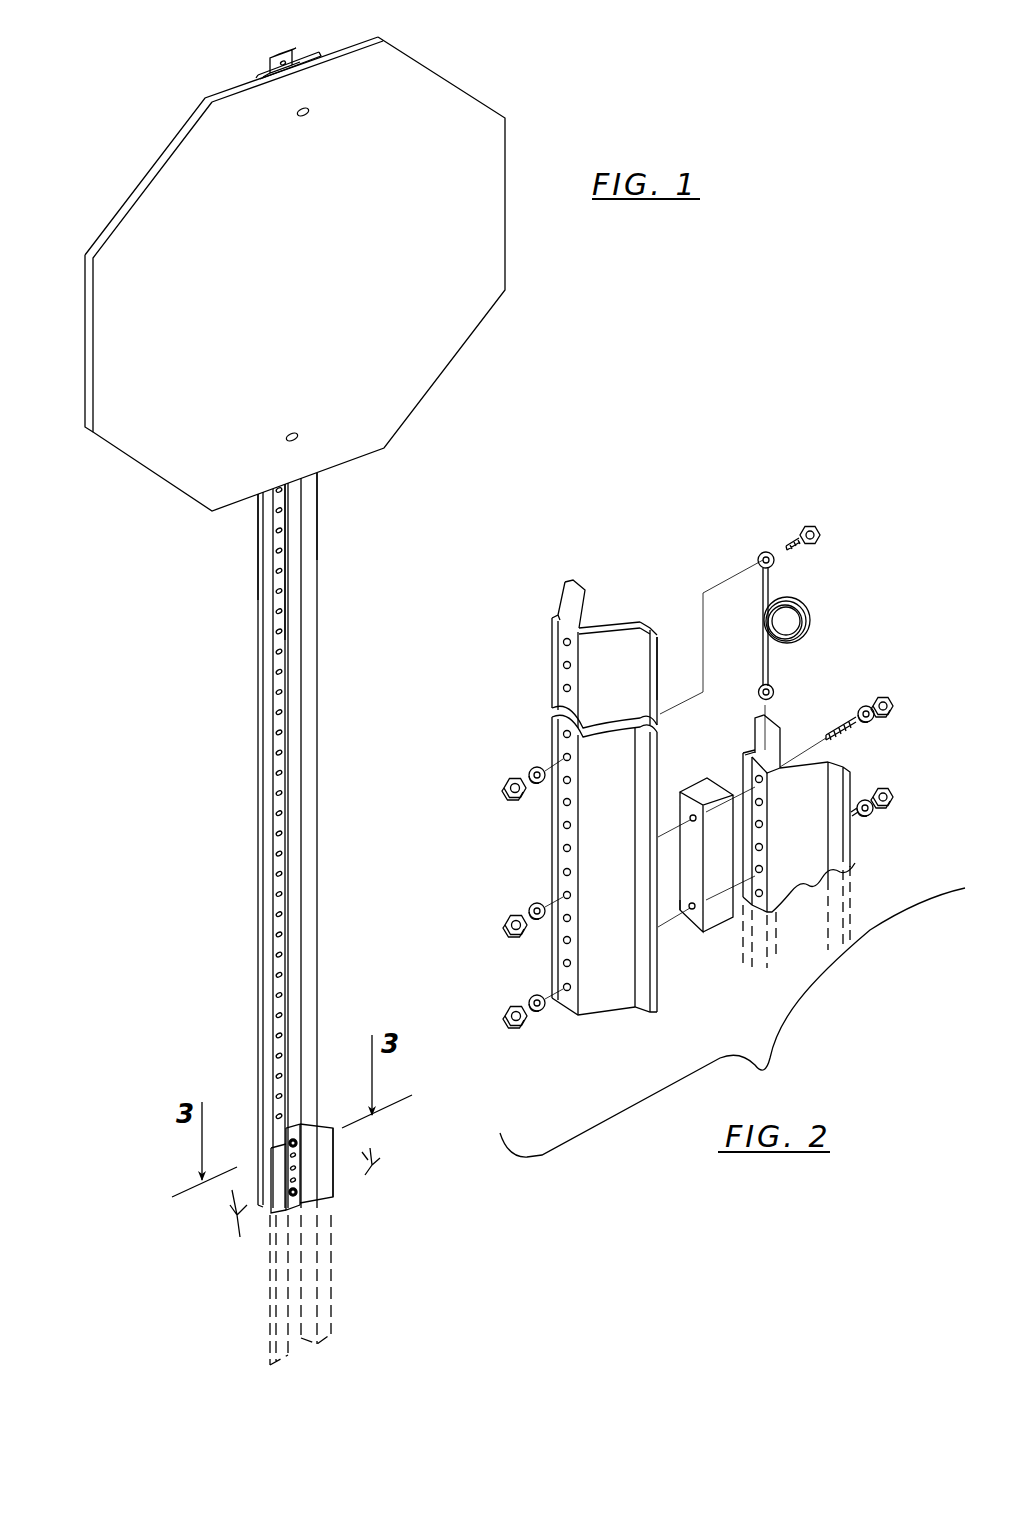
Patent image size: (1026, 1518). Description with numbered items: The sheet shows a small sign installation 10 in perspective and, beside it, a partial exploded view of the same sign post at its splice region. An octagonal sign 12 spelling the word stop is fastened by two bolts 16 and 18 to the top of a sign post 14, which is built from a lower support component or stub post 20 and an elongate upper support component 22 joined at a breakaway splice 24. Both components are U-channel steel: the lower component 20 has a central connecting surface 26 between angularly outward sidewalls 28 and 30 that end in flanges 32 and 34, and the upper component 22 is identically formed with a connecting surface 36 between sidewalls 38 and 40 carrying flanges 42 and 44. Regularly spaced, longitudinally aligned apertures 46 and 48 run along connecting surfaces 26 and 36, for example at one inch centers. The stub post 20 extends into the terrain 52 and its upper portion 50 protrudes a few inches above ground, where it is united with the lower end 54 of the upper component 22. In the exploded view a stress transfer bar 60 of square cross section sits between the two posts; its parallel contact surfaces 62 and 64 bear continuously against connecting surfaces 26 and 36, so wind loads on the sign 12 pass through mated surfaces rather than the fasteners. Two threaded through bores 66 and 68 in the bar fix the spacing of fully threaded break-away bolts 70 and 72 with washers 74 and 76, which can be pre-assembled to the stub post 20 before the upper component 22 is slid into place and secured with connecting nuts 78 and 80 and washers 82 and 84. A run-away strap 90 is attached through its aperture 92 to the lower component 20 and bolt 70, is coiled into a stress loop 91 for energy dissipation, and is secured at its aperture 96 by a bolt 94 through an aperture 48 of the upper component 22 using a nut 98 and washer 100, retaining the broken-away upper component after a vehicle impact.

In FIG. 1, the sign installation 10 is at (359, 261).
In FIG. 1, the sign 12 is at (395, 63).
In FIG. 1, the sign post 14 is at (353, 778).
In FIG. 2, the sign post 14 is at (613, 522).
In FIG. 1, the bolt 16 is at (308, 112).
In FIG. 1, the bolt 18 is at (297, 433).
In FIG. 1, the lower support component 20 is at (307, 1290).
In FIG. 2, the lower support component 20 is at (821, 834).
In FIG. 1, the upper support component 22 is at (272, 864).
In FIG. 2, the upper support component 22 is at (588, 638).
In FIG. 1, the breakaway splice 24 is at (271, 864).
In FIG. 2, the breakaway splice 24 is at (547, 843).
In FIG. 1, the connecting surface 26 is at (325, 1092).
In FIG. 2, the connecting surface 26 is at (804, 824).
In FIG. 2, the sidewall 28 is at (757, 733).
In FIG. 2, the sidewall 30 is at (827, 760).
In FIG. 1, the flange 32 is at (322, 1277).
In FIG. 2, the flange 32 is at (772, 720).
In FIG. 1, the flange 34 is at (277, 1313).
In FIG. 2, the flange 34 is at (837, 760).
In FIG. 1, the connecting surface 36 is at (281, 622).
In FIG. 2, the connecting surface 36 is at (587, 608).
In FIG. 2, the sidewall 38 is at (563, 593).
In FIG. 2, the sidewall 40 is at (617, 623).
In FIG. 1, the flange 42 is at (312, 528).
In FIG. 2, the flange 42 is at (575, 580).
In FIG. 1, the flange 44 is at (272, 578).
In FIG. 2, the flange 44 is at (655, 630).
In FIG. 1, the apertures 46 is at (297, 1177).
In FIG. 2, the apertures 46 is at (758, 897).
In FIG. 1, the apertures 48 is at (281, 692).
In FIG. 2, the apertures 48 is at (565, 687).
In FIG. 1, the upper portion 50 is at (268, 1140).
In FIG. 1, the terrain representation 52 is at (337, 1160).
In FIG. 2, the terrain representation 52 is at (790, 892).
In FIG. 1, the lower end 54 is at (340, 1140).
In FIG. 1, the stress transfer bar 60 is at (325, 1092).
In FIG. 2, the stress transfer bar 60 is at (706, 891).
In FIG. 2, the contact surface 62 is at (706, 868).
In FIG. 2, the contact surface 64 is at (693, 912).
In FIG. 2, the fastener receiving channel 66 is at (688, 815).
In FIG. 2, the fastener receiving channel 68 is at (686, 914).
In FIG. 2, the break-away bolt 70 is at (892, 700).
In FIG. 2, the break-away bolt 72 is at (892, 792).
In FIG. 2, the washer 74 is at (860, 708).
In FIG. 2, the washer 76 is at (870, 817).
In FIG. 2, the connecting nut 78 is at (508, 917).
In FIG. 2, the connecting nut 80 is at (510, 1007).
In FIG. 2, the washer 82 is at (539, 900).
In FIG. 2, the washer 84 is at (537, 993).
In FIG. 2, the run-away strap 90 is at (773, 619).
In FIG. 2, the loop 91 is at (810, 620).
In FIG. 2, the aperture 92 is at (770, 684).
In FIG. 2, the bolt 94 is at (818, 525).
In FIG. 2, the aperture 96 is at (762, 553).
In FIG. 2, the nut 98 is at (512, 778).
In FIG. 2, the washer 100 is at (541, 760).